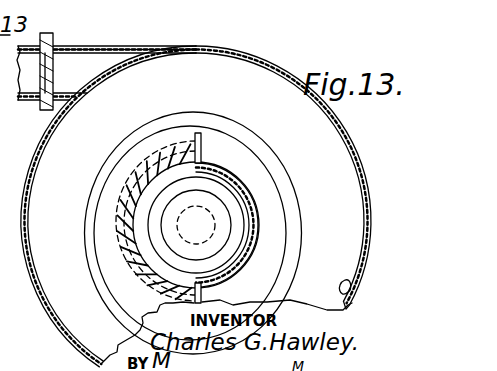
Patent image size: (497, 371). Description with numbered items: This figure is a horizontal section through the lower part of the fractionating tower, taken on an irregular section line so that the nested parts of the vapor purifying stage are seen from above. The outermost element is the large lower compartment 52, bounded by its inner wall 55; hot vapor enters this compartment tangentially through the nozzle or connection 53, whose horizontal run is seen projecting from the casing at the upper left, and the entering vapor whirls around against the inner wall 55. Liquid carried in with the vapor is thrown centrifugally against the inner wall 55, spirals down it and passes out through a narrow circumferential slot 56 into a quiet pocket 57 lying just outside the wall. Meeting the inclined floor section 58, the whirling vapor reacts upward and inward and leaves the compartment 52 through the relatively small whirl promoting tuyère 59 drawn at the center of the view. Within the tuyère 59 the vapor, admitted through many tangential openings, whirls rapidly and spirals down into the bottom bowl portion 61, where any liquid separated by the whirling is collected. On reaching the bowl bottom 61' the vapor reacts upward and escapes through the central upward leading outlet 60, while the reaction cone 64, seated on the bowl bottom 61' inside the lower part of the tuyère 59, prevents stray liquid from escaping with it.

The lower compartment 52 is at (191, 215).
The nozzle or connection 53 is at (0, 68).
The inner wall 55 is at (33, 194).
The circumferential slot 56 is at (35, 276).
The quiet pocket 57 is at (118, 228).
The inclined floor section 58 is at (333, 182).
The whirl promoting tuyère 59 is at (170, 160).
The outlet 60 is at (256, 214).
The bottom bowl portion 61 is at (206, 222).
The bowl bottom 61' is at (181, 274).
The reaction cone 64 is at (196, 225).